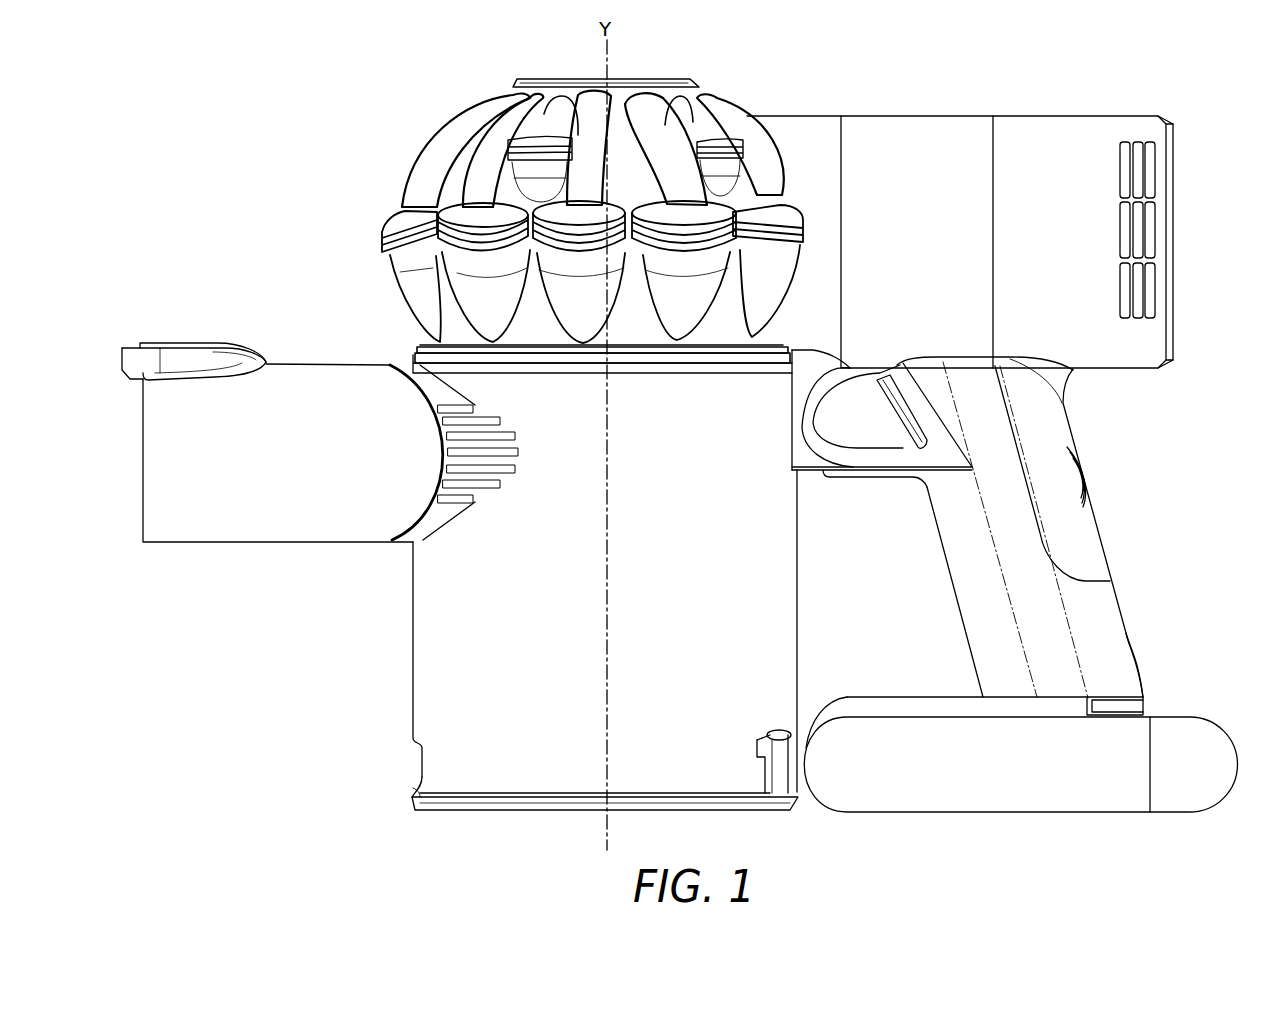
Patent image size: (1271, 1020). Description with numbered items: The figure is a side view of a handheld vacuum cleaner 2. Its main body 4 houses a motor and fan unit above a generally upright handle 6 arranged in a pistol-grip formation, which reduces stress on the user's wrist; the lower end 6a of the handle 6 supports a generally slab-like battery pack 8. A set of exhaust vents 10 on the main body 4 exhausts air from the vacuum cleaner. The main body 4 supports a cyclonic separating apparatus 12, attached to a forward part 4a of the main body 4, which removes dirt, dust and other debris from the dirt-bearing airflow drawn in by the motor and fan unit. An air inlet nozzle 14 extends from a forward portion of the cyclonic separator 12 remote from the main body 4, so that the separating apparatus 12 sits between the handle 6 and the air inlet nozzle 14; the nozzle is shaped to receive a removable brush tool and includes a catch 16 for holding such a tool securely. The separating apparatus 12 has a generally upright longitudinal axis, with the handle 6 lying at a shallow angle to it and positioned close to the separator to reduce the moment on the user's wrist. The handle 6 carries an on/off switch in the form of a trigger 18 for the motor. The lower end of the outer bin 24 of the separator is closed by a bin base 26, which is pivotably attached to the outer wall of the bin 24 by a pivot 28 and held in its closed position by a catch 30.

The handheld vacuum cleaner 2 is at (1214, 88).
The main body 4 is at (1017, 99).
The forward part of the main body 4a is at (841, 128).
The handle 6 is at (1116, 597).
The lower end of the handle 6a is at (1142, 662).
The battery pack 8 is at (1110, 814).
The exhaust vents 10 is at (1155, 289).
The cyclonic separating apparatus 12 is at (733, 89).
The air inlet nozzle 14 is at (221, 530).
The catch 16 is at (236, 340).
The trigger 18 is at (880, 397).
The outer bin 24 is at (418, 689).
The bin base 26 is at (538, 813).
The pivot 28 is at (418, 785).
The catch 30 is at (778, 800).